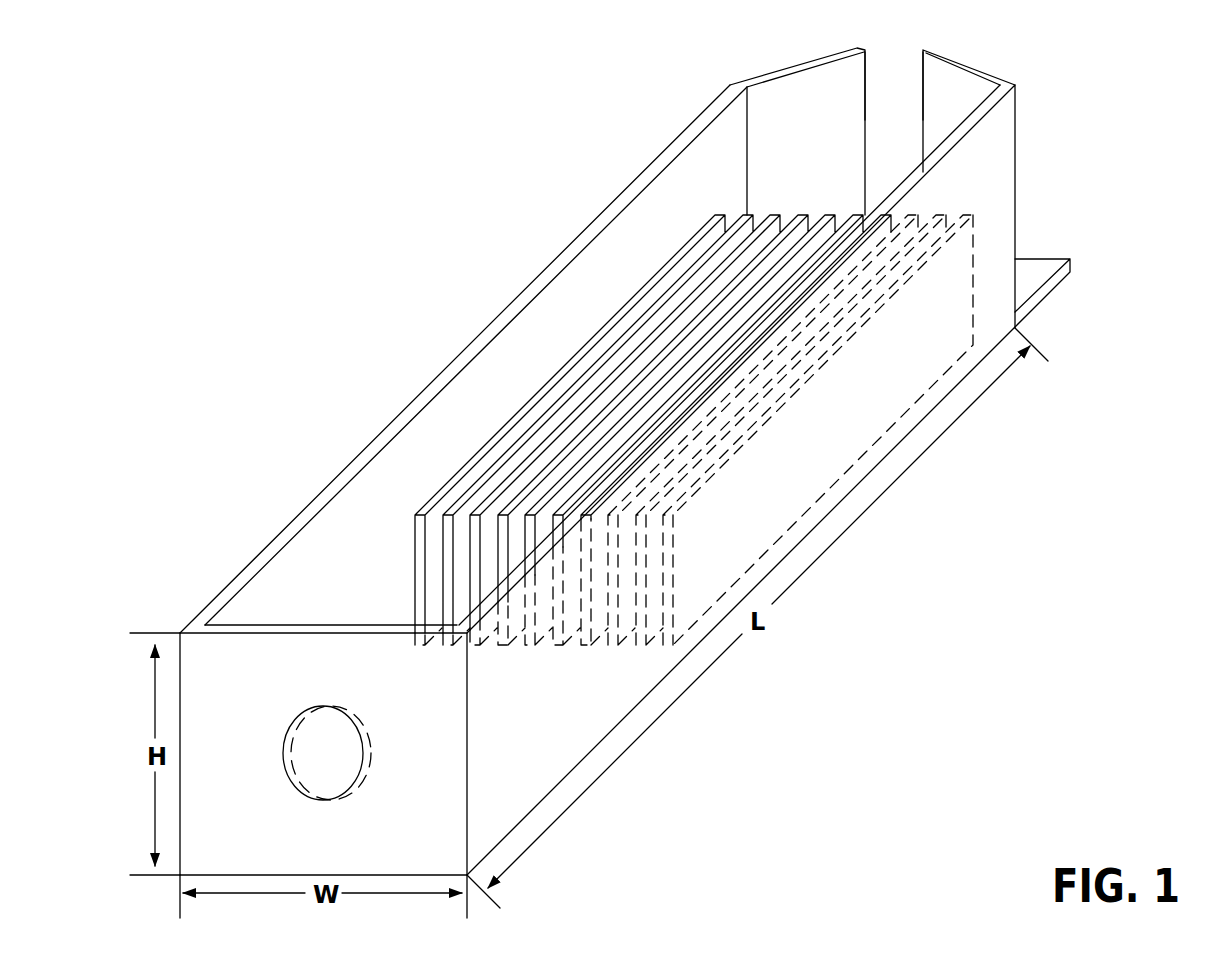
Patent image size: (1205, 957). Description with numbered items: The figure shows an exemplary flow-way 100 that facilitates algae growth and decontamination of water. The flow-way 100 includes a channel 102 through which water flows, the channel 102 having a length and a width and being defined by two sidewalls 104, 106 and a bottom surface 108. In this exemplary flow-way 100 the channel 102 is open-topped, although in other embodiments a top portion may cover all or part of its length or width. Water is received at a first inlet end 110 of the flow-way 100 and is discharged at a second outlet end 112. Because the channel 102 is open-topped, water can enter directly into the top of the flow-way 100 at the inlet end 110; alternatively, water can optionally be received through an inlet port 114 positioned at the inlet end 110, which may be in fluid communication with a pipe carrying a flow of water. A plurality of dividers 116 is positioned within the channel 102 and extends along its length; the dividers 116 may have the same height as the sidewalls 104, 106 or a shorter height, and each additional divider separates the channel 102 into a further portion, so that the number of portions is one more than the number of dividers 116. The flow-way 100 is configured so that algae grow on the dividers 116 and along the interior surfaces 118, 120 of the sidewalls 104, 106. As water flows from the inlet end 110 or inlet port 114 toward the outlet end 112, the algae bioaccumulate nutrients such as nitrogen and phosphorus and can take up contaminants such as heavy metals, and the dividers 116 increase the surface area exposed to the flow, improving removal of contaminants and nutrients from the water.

The flow-way 100 is at (1086, 58).
The channel 102 is at (527, 323).
The sidewall 104 is at (385, 472).
The sidewall 106 is at (1000, 213).
The bottom surface 108 is at (937, 409).
The first inlet end 110 is at (213, 581).
The second outlet end 112 is at (912, 30).
The inlet port 114 is at (300, 720).
The dividers 116 is at (475, 472).
The interior surface 118 is at (704, 167).
The interior surface 120 is at (892, 188).